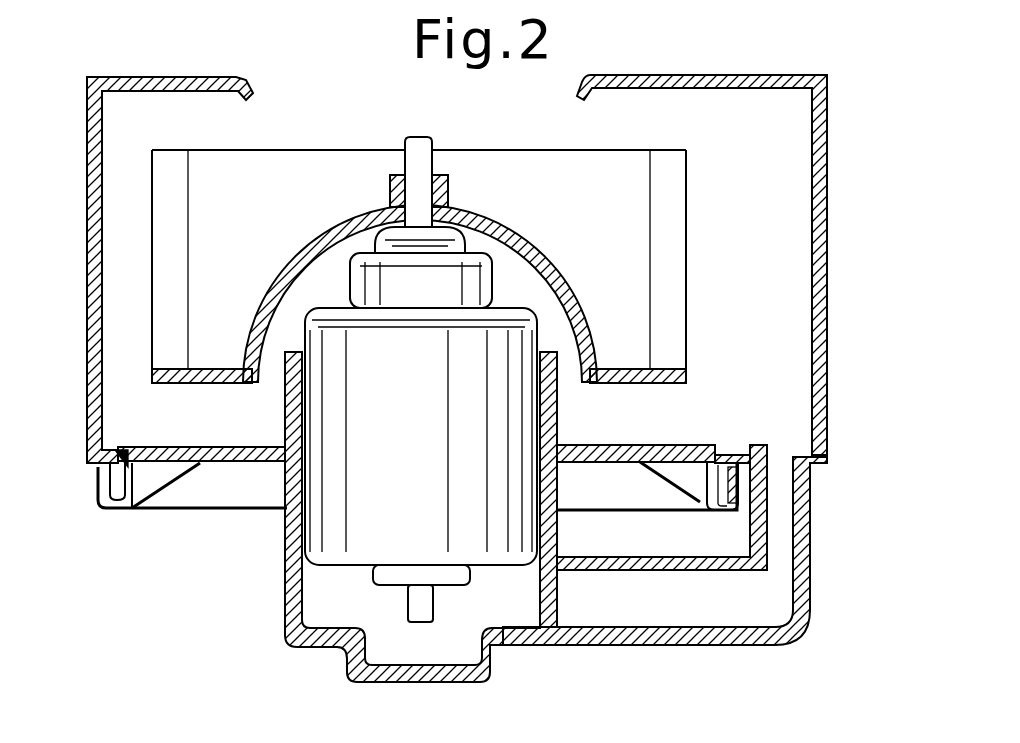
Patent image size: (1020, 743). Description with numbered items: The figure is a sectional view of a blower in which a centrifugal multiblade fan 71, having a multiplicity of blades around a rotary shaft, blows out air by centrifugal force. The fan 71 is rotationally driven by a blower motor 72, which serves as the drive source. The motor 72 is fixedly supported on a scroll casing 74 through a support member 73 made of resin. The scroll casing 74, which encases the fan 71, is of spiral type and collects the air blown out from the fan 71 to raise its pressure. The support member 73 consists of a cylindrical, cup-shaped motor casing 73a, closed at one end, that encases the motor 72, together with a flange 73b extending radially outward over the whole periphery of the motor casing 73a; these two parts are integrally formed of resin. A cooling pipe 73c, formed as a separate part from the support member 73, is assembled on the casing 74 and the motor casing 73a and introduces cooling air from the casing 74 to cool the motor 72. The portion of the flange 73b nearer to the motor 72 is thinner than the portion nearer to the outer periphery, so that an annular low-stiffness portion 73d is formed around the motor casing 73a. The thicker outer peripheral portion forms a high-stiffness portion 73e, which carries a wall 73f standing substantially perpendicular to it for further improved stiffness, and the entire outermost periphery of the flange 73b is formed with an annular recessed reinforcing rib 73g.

The centrifugal multiblade fan 71 is at (686, 210).
The blower motor 72 is at (485, 540).
The support member 73 is at (483, 525).
The motor casing 73a is at (283, 608).
The flange 73b is at (223, 464).
The cooling pipe 73c is at (812, 538).
The low-stiffness portion 73d is at (252, 463).
The high-stiffness portion 73e is at (148, 462).
The wall 73f is at (168, 490).
The annular recessed reinforcing rib 73g is at (737, 487).
The scroll casing 74 is at (822, 268).